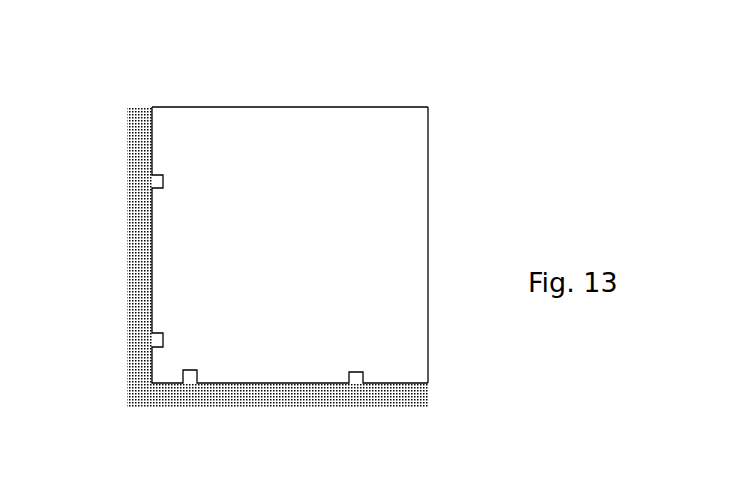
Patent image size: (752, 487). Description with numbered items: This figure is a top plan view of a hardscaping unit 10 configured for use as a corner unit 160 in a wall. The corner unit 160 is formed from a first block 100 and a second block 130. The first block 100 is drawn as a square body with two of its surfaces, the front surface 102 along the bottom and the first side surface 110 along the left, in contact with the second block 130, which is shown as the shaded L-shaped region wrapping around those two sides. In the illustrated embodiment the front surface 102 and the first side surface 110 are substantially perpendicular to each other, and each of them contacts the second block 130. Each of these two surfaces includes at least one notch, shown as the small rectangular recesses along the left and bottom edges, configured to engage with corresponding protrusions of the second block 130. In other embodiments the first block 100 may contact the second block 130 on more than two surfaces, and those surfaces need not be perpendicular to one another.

The hardscaping unit 10 is at (482, 185).
The first block 100 is at (451, 115).
The front surface 102 is at (417, 383).
The first side surface 110 is at (150, 143).
The second block 130 is at (232, 425).
The corner unit 160 is at (325, 130).